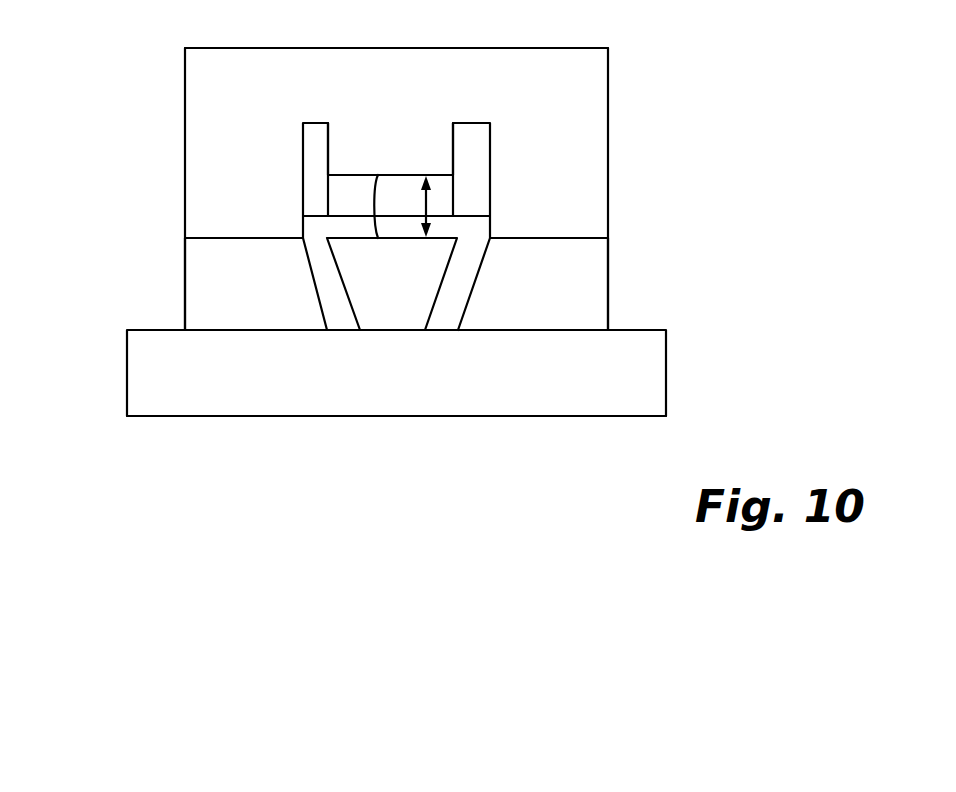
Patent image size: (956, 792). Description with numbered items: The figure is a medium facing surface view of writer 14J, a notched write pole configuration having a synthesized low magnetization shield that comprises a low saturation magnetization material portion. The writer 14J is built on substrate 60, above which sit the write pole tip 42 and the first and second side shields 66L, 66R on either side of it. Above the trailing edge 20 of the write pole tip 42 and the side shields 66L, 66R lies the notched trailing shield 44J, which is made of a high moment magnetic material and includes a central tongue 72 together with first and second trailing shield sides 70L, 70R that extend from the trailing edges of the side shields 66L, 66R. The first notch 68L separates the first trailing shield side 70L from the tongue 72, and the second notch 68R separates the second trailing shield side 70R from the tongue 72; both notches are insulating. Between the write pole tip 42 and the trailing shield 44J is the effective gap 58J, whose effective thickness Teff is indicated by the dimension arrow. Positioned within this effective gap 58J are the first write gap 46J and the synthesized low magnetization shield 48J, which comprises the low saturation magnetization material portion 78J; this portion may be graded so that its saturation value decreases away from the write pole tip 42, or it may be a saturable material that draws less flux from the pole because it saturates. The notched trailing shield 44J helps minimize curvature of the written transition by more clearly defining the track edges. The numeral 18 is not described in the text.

The writer 14J is at (138, 62).
The trailing edge 20 is at (252, 40).
The notched trailing shield 44J is at (396, 150).
The first notch 68L is at (311, 134).
The second notch 68R is at (467, 132).
The tongue 72 is at (330, 152).
The low saturation magnetization material portion 78J is at (448, 182).
The synthesized low magnetization shield 48J is at (343, 188).
The effective gap 58J is at (373, 211).
The effective thickness Teff is at (428, 205).
The first trailing shield side 70L is at (194, 191).
The second trailing shield side 70R is at (584, 219).
The first write gap 46J is at (318, 242).
The write pole tip 42 is at (392, 284).
The first side shield 66L is at (256, 284).
The second side shield 66R is at (533, 284).
The substrate 60 is at (396, 373).
The bottom surface of substrate 18 is at (230, 428).